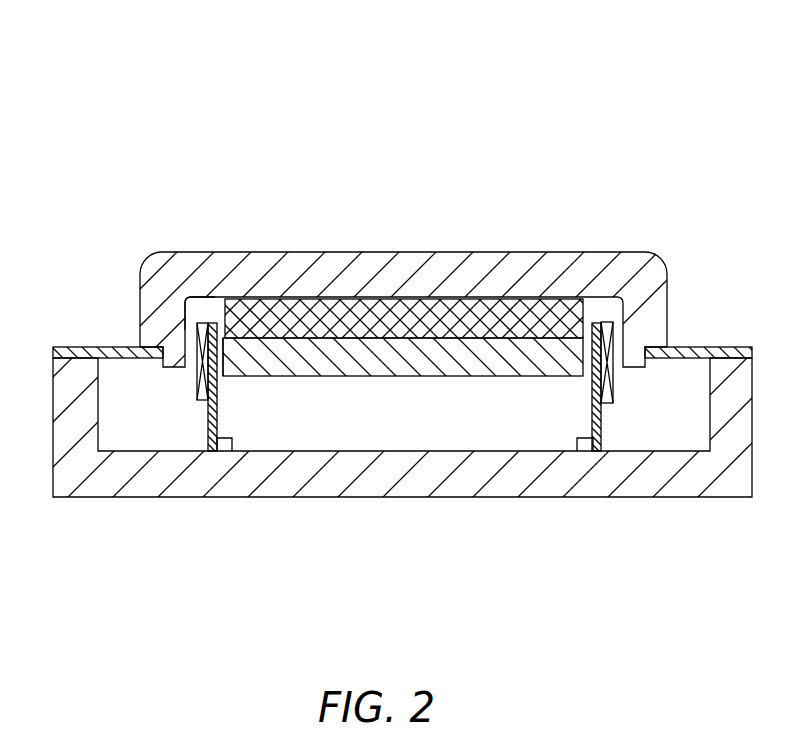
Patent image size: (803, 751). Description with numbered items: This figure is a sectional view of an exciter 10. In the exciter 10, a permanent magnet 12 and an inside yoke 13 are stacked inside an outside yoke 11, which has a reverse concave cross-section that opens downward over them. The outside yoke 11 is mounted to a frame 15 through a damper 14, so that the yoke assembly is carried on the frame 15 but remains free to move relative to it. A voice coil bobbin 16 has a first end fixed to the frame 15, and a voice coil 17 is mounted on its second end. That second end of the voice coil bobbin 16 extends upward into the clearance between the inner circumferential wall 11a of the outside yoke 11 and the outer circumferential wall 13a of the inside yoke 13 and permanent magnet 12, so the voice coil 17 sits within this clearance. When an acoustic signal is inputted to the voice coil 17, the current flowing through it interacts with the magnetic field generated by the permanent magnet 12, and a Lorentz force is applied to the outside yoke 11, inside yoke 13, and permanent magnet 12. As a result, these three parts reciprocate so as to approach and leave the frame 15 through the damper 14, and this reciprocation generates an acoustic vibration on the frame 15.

The exciter 10 is at (160, 116).
The outside yoke 11 is at (335, 258).
The inner circumferential wall of the outside yoke 11a is at (192, 300).
The permanent magnet 12 is at (400, 305).
The inside yoke 13 is at (401, 377).
The outer circumferential wall of the inside yoke 13a is at (223, 350).
The damper 14 is at (72, 348).
The frame 15 is at (365, 496).
The voice coil bobbin 16 is at (218, 417).
The voice coil 17 is at (197, 395).